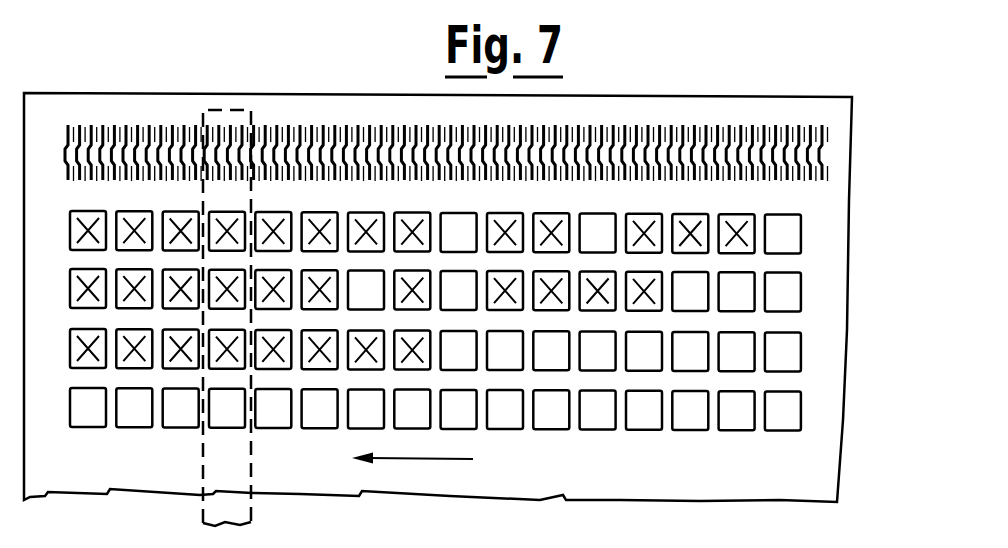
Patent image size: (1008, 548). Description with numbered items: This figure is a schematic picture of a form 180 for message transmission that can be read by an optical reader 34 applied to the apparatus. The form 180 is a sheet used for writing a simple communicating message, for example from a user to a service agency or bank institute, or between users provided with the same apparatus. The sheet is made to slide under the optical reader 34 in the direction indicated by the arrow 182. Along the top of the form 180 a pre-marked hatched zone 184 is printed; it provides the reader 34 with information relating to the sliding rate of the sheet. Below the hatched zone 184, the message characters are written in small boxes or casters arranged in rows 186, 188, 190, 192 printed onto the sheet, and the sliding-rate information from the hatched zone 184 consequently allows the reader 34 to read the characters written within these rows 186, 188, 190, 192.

The form 180 is at (143, 107).
The optical reader 34 is at (228, 111).
The pre-marked hatched zone 184 is at (326, 131).
The row of small boxes 186 is at (802, 230).
The row of small boxes 188 is at (802, 290).
The row of small boxes 190 is at (802, 345).
The row of small boxes 192 is at (802, 405).
The arrow 182 is at (465, 459).